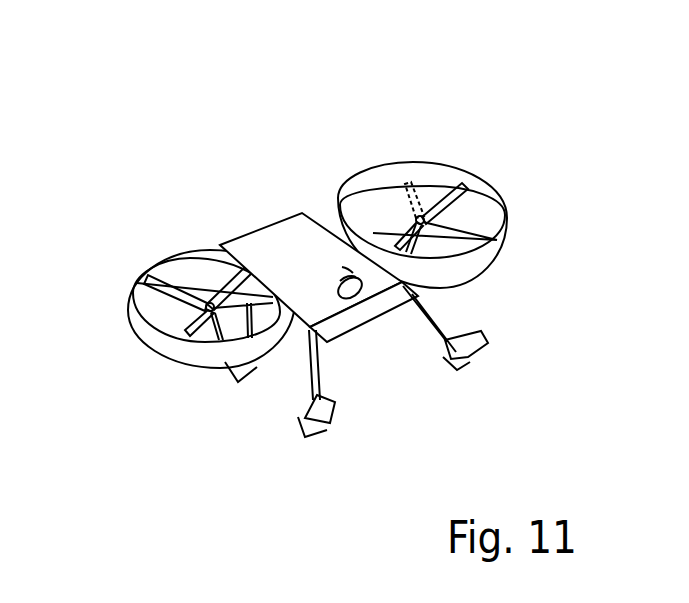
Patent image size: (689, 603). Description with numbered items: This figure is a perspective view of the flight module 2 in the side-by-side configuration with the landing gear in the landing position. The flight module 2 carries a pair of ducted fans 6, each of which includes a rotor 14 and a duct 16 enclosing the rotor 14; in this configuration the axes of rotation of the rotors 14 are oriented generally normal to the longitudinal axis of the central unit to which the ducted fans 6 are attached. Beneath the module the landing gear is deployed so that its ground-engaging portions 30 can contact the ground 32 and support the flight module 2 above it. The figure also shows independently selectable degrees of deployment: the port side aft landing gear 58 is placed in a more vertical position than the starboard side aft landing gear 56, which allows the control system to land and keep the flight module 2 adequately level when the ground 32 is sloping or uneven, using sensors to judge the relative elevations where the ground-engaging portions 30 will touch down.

The flight module 2 is at (301, 67).
The ducted fan 6 is at (161, 289).
The rotor 14 is at (186, 259).
The duct 16 is at (430, 212).
The ground-engaging portion 30 is at (477, 365).
The ground 32 is at (205, 435).
The starboard side aft landing gear 56 is at (433, 320).
The port side aft landing gear 58 is at (308, 372).